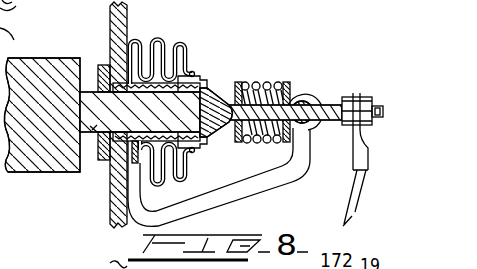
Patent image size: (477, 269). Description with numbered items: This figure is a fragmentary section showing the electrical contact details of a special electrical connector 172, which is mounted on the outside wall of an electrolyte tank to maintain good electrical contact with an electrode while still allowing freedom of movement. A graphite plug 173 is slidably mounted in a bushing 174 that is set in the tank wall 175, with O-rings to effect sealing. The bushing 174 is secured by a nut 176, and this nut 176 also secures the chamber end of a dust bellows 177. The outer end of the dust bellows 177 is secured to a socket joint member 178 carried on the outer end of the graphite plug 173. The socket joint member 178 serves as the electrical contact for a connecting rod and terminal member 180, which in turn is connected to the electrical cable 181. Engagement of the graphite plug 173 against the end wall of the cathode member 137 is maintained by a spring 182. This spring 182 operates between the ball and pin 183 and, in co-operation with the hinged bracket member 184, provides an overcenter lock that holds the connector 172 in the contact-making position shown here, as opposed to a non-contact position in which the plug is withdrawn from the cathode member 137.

The cathode member 137 is at (38, 162).
The electrical connector 172 is at (275, 68).
The graphite plug 173 is at (88, 134).
The bushing 174 is at (98, 81).
The tank wall 175 is at (127, 13).
The nut 176 is at (128, 65).
The dust bellows 177 is at (182, 50).
The socket joint member 178 is at (203, 92).
The connecting rod and terminal member 180 is at (332, 110).
The electrical cable 181 is at (366, 183).
The spring 182 is at (250, 143).
The ball and pin 183 is at (302, 103).
The hinged bracket member 184 is at (283, 181).